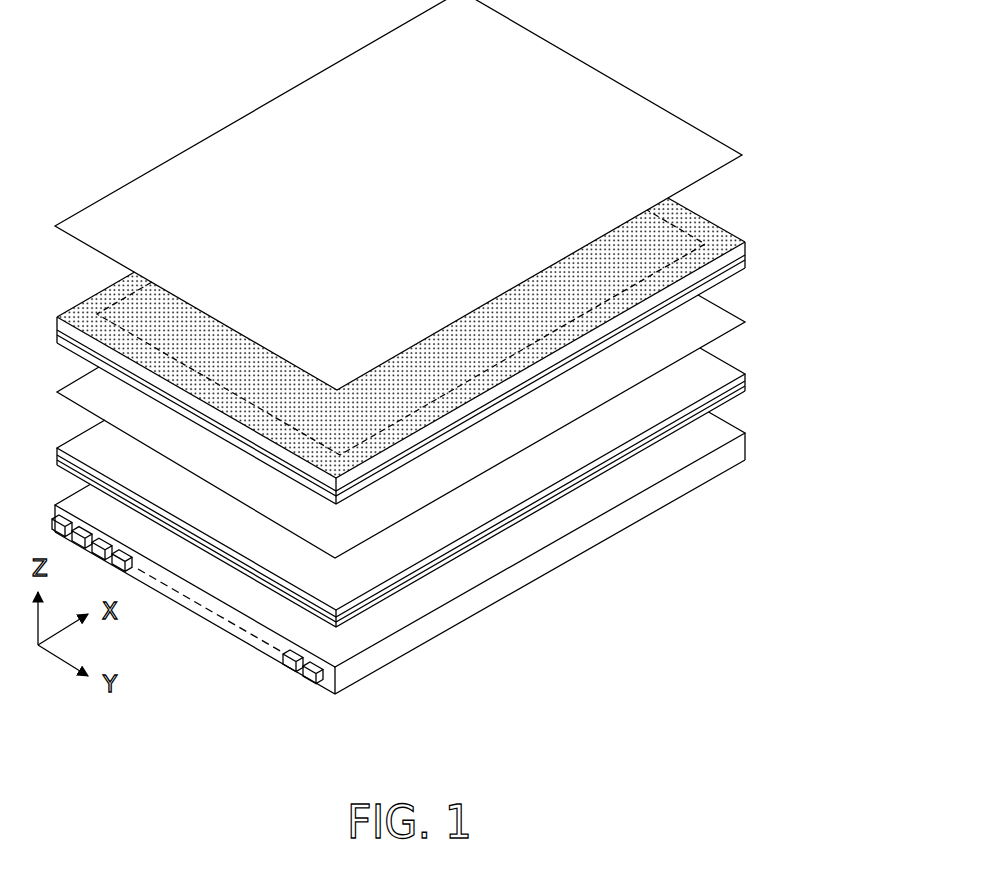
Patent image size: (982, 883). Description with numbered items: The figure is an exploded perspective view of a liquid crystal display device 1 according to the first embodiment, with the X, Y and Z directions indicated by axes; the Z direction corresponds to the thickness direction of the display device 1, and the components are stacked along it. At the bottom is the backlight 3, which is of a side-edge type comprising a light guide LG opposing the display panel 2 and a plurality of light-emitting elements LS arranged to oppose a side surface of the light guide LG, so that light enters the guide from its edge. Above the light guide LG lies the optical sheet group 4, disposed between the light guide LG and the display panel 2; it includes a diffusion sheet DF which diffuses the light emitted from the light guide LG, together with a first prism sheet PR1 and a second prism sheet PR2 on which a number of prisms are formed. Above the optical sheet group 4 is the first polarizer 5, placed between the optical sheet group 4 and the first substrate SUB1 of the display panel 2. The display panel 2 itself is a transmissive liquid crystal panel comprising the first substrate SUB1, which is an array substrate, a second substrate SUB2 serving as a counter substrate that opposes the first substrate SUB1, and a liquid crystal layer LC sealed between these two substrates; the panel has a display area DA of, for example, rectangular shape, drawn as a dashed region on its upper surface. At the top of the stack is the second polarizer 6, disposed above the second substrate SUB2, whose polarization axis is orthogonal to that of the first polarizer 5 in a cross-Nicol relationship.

The liquid crystal display device 1 is at (138, 139).
The display panel 2 is at (474, 337).
The backlight 3 is at (398, 567).
The optical sheet group 4 is at (467, 482).
The first polarizer 5 is at (740, 318).
The second polarizer 6 is at (712, 138).
The display area DA is at (700, 214).
The first substrate SUB1 is at (740, 270).
The second substrate SUB2 is at (738, 239).
The liquid crystal layer LC is at (748, 257).
The first prism sheet PR1 is at (748, 384).
The second prism sheet PR2 is at (738, 370).
The diffusion sheet DF is at (440, 506).
The light guide LG is at (413, 640).
The light-emitting elements LS is at (290, 672).